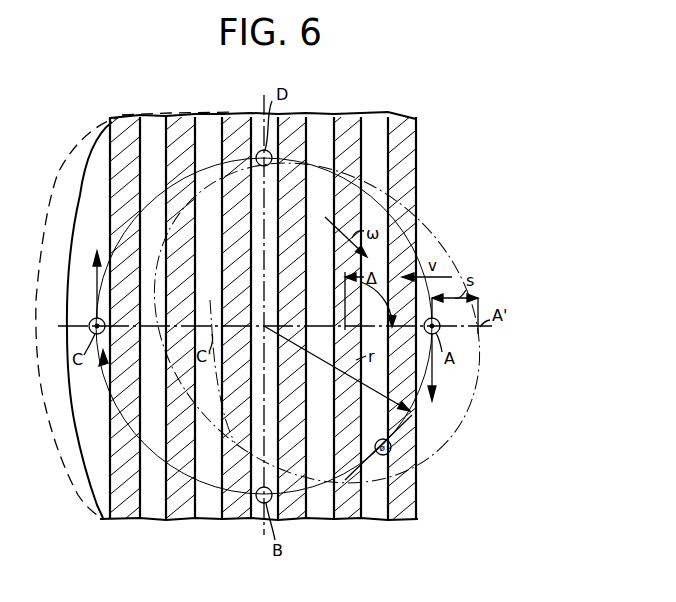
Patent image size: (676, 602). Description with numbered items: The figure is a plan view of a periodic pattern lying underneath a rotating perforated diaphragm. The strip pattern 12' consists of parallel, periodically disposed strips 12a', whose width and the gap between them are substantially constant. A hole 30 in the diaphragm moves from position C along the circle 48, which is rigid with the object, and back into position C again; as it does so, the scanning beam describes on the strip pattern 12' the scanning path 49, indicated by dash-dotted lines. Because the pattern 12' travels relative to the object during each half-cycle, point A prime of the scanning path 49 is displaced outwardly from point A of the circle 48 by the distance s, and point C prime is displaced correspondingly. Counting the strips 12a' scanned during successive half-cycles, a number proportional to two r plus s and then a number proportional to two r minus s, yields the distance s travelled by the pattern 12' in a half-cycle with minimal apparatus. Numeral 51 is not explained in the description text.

The hole 30 is at (92, 320).
The center line 51 is at (206, 325).
The scanning path 49 is at (456, 438).
The strip pattern 12' is at (252, 317).
The strips 12a' is at (164, 337).
The circle 48 is at (212, 493).